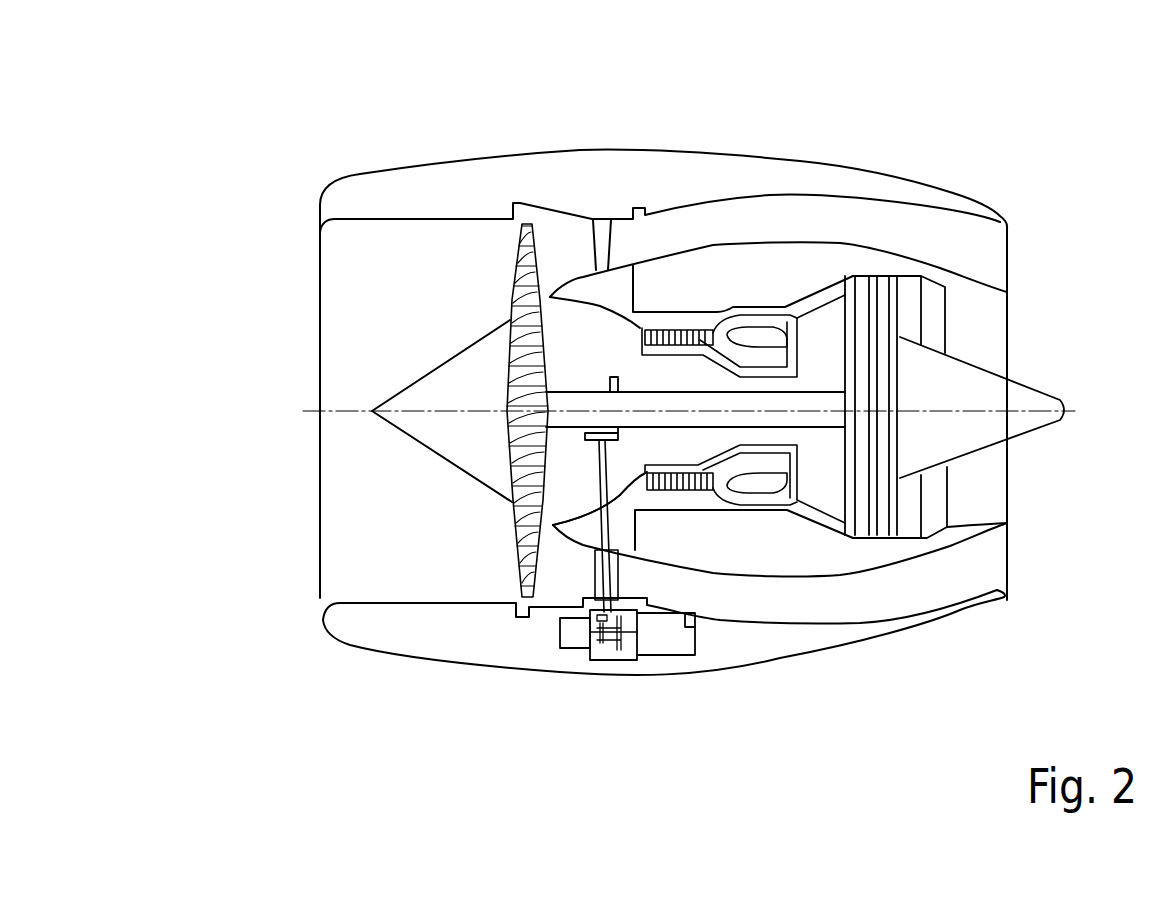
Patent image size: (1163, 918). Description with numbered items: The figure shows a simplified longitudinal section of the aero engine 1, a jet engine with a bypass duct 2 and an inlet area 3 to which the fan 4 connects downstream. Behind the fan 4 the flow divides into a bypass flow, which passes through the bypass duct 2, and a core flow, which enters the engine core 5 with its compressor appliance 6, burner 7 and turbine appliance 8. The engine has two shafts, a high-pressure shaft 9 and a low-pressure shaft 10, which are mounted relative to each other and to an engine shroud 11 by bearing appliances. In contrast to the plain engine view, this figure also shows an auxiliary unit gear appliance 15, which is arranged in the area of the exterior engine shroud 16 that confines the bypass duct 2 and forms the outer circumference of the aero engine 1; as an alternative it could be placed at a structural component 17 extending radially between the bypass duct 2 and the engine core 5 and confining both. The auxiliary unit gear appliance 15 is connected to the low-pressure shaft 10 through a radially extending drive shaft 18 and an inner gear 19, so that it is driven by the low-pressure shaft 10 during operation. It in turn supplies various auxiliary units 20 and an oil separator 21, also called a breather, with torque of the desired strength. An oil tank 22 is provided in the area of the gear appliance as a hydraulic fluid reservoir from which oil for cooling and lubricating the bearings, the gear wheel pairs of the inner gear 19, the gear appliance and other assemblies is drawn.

The aero engine 1 is at (393, 125).
The bypass duct 2 is at (705, 225).
The inlet area 3 is at (335, 255).
The fan 4 is at (517, 236).
The engine core 5 is at (510, 520).
The compressor appliance 6 is at (668, 315).
The burner 7 is at (763, 330).
The turbine appliance 8 is at (875, 292).
The high-pressure shaft 9 is at (862, 267).
The low-pressure shaft 10 is at (895, 292).
The engine shroud 11 is at (698, 323).
The auxiliary unit gear appliance 15 is at (628, 670).
The exterior engine shroud 16 is at (493, 668).
The structural component 17 is at (602, 568).
The drive shaft 18 is at (572, 528).
The inner gear 19 is at (568, 452).
The auxiliary units 20 is at (687, 670).
The oil separator 21 is at (697, 618).
The oil tank 22 is at (573, 652).